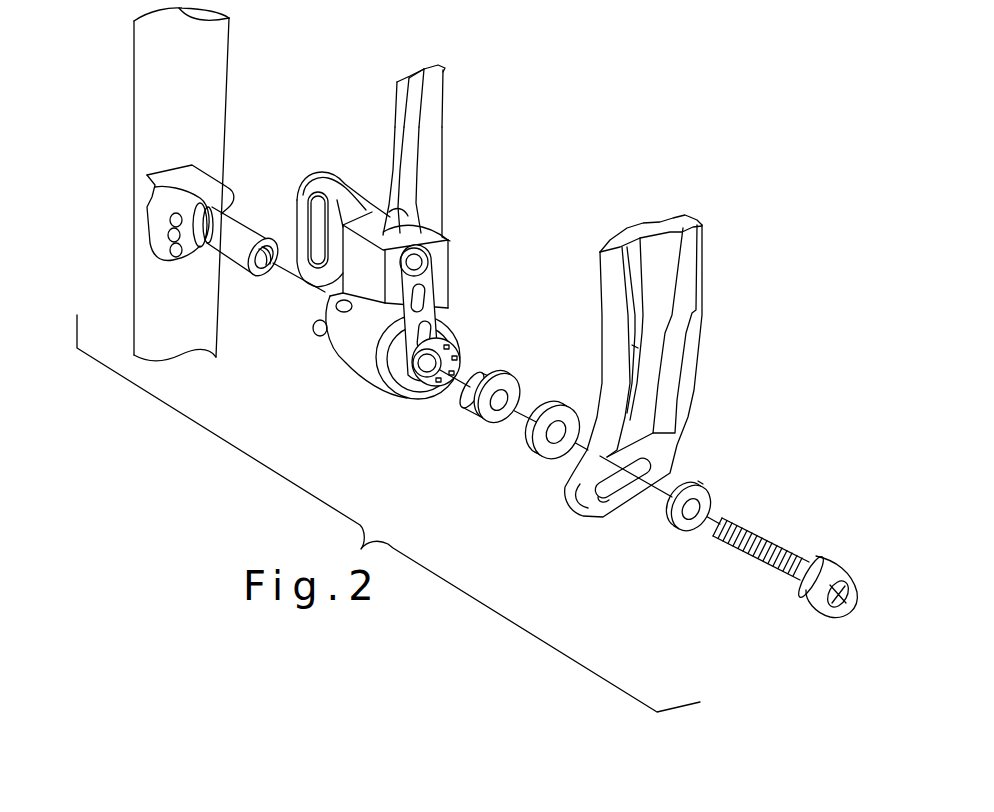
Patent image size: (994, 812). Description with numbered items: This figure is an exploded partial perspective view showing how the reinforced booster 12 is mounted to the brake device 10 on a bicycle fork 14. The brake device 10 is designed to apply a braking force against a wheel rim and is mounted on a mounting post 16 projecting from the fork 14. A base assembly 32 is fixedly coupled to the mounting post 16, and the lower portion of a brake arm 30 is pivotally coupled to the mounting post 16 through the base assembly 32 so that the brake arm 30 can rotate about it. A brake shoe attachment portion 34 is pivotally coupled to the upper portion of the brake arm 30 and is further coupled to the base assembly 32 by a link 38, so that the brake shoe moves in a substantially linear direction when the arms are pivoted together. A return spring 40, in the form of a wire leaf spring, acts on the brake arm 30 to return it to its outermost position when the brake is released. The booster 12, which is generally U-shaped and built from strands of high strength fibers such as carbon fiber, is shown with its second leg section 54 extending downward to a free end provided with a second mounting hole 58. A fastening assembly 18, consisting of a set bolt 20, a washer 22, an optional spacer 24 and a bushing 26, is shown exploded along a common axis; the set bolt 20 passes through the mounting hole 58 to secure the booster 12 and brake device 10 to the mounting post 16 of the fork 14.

The brake device 10 is at (543, 110).
The reinforced booster 12 is at (653, 360).
The fork 14 is at (134, 105).
The mounting post 16 is at (243, 220).
The fastening assembly 18 is at (731, 520).
The set bolt 20 is at (777, 544).
The washer 22 is at (708, 486).
The spacer 24 is at (553, 400).
The bushing 26 is at (492, 366).
The brake arm 30 is at (417, 172).
The base assembly 32 is at (354, 382).
The brake shoe attachment portion 34 is at (340, 170).
The link 38 is at (434, 292).
The return spring 40 is at (394, 96).
The second leg section 54 is at (678, 400).
The second mounting hole 58 is at (573, 504).